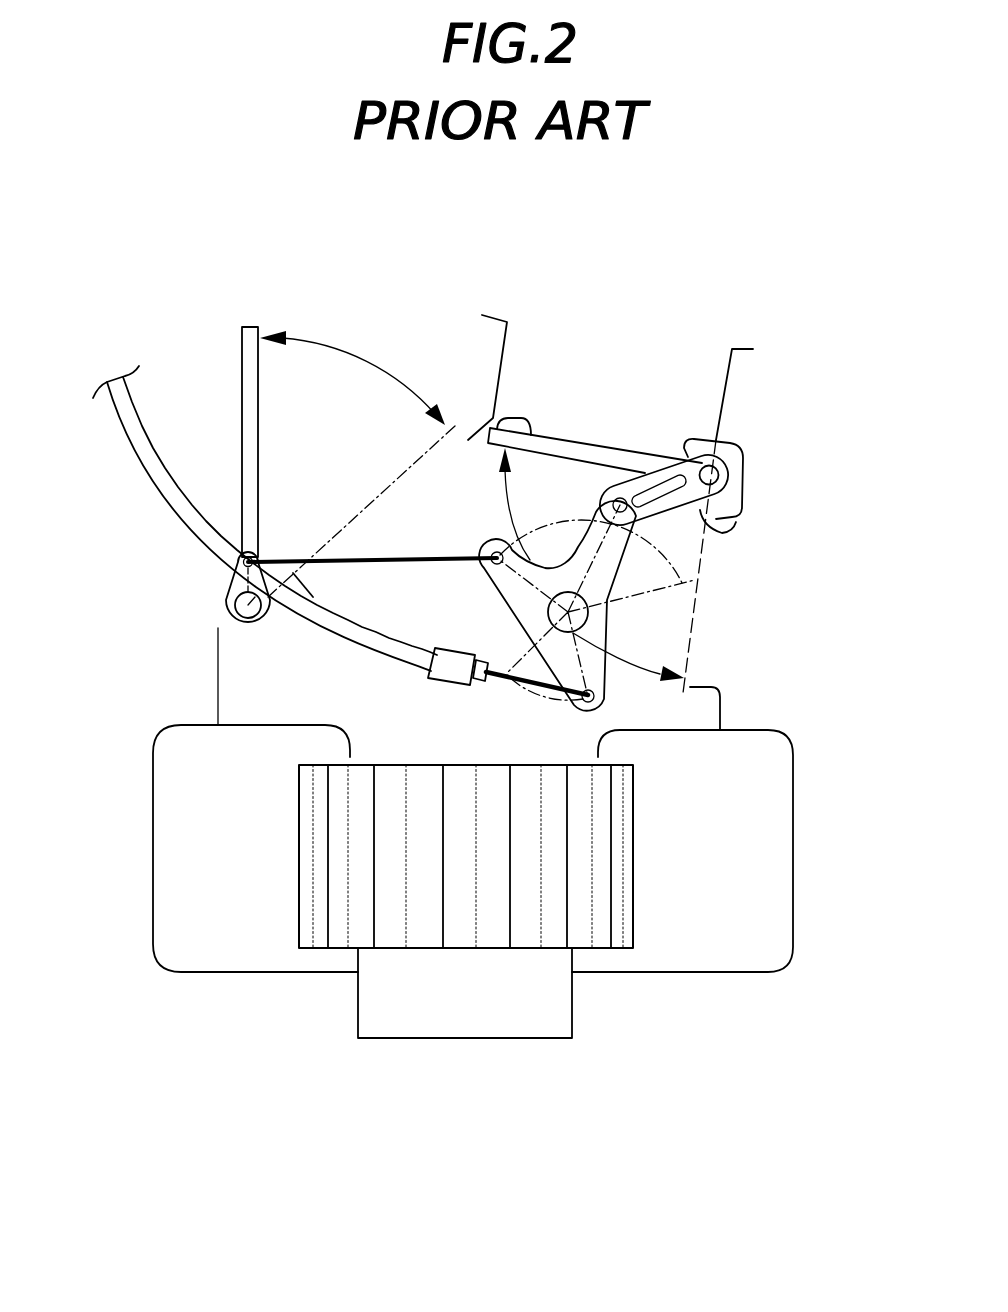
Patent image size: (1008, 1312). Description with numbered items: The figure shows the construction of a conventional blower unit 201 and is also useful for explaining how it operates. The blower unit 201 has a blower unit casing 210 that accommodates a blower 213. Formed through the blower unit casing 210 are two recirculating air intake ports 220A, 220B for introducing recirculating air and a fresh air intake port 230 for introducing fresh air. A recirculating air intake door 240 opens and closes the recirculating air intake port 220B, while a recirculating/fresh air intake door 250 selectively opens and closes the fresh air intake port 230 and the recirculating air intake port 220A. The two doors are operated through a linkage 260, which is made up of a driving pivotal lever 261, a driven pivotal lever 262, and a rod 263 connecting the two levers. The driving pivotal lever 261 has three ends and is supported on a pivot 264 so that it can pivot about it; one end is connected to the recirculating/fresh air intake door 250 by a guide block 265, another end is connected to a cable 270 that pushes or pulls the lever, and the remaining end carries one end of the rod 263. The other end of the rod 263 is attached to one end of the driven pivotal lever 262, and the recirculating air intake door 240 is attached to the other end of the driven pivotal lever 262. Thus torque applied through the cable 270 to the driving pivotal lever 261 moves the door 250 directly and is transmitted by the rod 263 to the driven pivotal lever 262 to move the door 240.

The blower unit 201 is at (769, 324).
The blower unit casing 210 is at (820, 738).
The blower 213 is at (540, 1054).
The recirculating air intake port 220A is at (702, 688).
The recirculating air intake port 220B is at (480, 425).
The fresh air intake port 230 is at (591, 400).
The recirculating air intake door 240 is at (244, 372).
The recirculating/fresh air intake door 250 is at (620, 456).
The linkage 260 is at (545, 486).
The driving pivotal lever 261 is at (608, 563).
The driven pivotal lever 262 is at (228, 582).
The rod 263 is at (405, 556).
The pivot 264 is at (588, 617).
The guide block 265 is at (718, 533).
The cable 270 is at (140, 452).